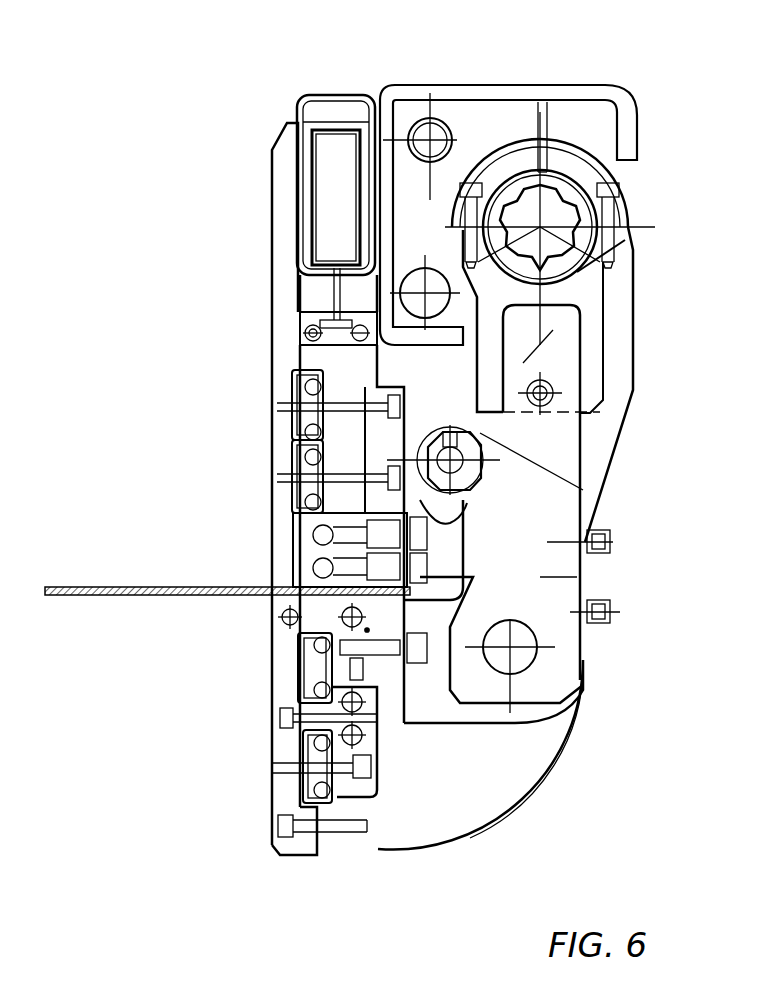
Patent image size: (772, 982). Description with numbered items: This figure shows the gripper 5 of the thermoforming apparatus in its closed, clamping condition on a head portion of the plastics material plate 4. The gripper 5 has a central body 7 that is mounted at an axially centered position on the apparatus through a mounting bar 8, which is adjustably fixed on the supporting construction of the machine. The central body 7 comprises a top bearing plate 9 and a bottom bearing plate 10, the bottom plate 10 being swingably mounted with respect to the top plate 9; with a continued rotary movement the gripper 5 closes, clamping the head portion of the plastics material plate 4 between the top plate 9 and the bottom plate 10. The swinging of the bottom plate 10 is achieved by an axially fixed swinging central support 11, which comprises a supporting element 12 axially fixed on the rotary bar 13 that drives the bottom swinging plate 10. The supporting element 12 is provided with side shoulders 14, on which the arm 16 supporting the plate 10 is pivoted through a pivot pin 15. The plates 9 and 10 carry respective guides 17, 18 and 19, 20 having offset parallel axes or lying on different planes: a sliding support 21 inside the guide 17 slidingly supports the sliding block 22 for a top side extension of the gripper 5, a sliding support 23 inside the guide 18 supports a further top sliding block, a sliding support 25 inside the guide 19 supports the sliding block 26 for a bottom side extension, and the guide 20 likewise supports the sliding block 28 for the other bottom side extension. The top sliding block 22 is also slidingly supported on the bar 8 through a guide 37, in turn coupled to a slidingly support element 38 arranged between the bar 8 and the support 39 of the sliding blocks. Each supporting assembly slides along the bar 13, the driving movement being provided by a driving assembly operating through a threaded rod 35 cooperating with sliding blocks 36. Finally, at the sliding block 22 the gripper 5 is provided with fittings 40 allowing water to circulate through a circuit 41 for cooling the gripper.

The plastics material plate 4 is at (100, 597).
The gripper 5 is at (335, 890).
The central body 7 is at (165, 455).
The mounting bar 8 is at (340, 86).
The top bearing plate 9 is at (283, 165).
The bottom bearing plate 10 is at (303, 848).
The swinging central support 11 is at (655, 310).
The supporting element 12 is at (598, 175).
The rotary bar 13 is at (555, 207).
The side shoulders 14 is at (603, 445).
The pivot pin 15 is at (520, 655).
The arm 16 is at (530, 777).
The guide 17 is at (297, 427).
The guide 18 is at (300, 455).
The guide 19 is at (300, 655).
The guide 20 is at (300, 807).
The sliding support 21 is at (298, 368).
The sliding block 22 is at (310, 570).
The sliding support 23 is at (298, 503).
The sliding support 25 is at (300, 683).
The sliding block 26 is at (317, 782).
The sliding block 28 is at (367, 630).
The threaded rod 35 is at (430, 130).
The sliding blocks 36 is at (480, 115).
The guide 37 is at (345, 323).
The slidingly support element 38 is at (363, 367).
The support 39 is at (310, 315).
The fittings 40 is at (430, 572).
The circuit 41 is at (312, 530).